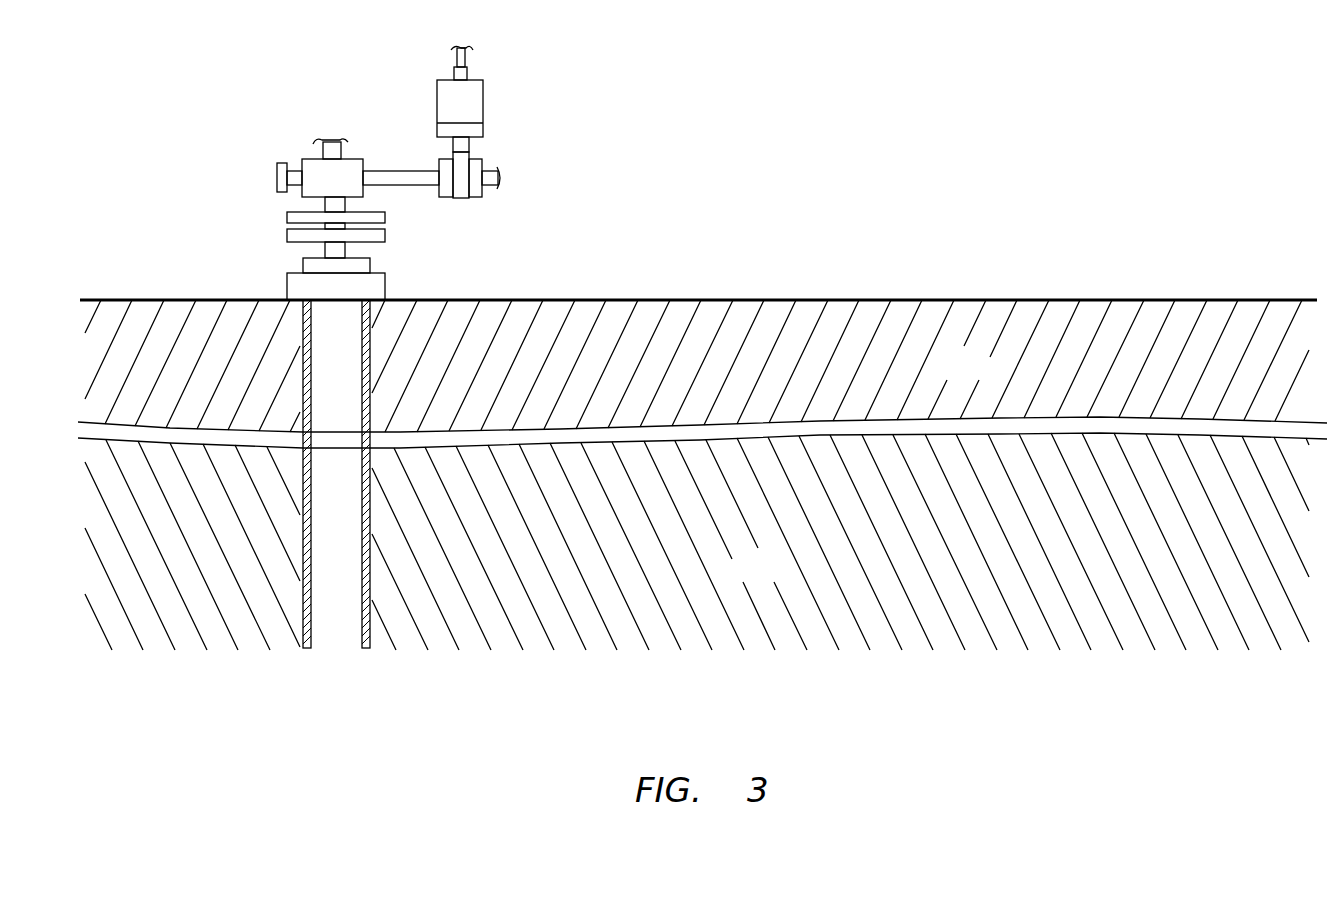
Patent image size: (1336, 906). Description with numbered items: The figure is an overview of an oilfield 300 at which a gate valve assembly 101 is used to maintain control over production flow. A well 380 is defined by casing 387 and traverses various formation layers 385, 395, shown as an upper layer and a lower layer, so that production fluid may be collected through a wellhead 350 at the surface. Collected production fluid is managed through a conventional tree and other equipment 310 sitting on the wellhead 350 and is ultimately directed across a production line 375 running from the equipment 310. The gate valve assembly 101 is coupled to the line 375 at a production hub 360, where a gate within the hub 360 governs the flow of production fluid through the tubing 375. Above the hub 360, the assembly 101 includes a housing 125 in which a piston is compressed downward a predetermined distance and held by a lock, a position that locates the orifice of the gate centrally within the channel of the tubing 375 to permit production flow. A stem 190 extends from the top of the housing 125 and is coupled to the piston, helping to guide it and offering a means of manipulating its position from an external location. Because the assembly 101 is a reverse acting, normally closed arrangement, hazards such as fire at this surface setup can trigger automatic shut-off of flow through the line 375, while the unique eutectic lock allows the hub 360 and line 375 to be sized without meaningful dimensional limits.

The gate valve assembly 101 is at (521, 85).
The housing 125 is at (460, 108).
The stem 190 is at (460, 63).
The oilfield 300 is at (562, 300).
The equipment 310 is at (274, 140).
The wellhead 350 is at (396, 268).
The production hub 360 is at (460, 195).
The production tubing 375 is at (387, 168).
The well 380 is at (353, 376).
The formation layer 385 is at (983, 376).
The casing 387 is at (372, 582).
The formation layer 395 is at (778, 577).